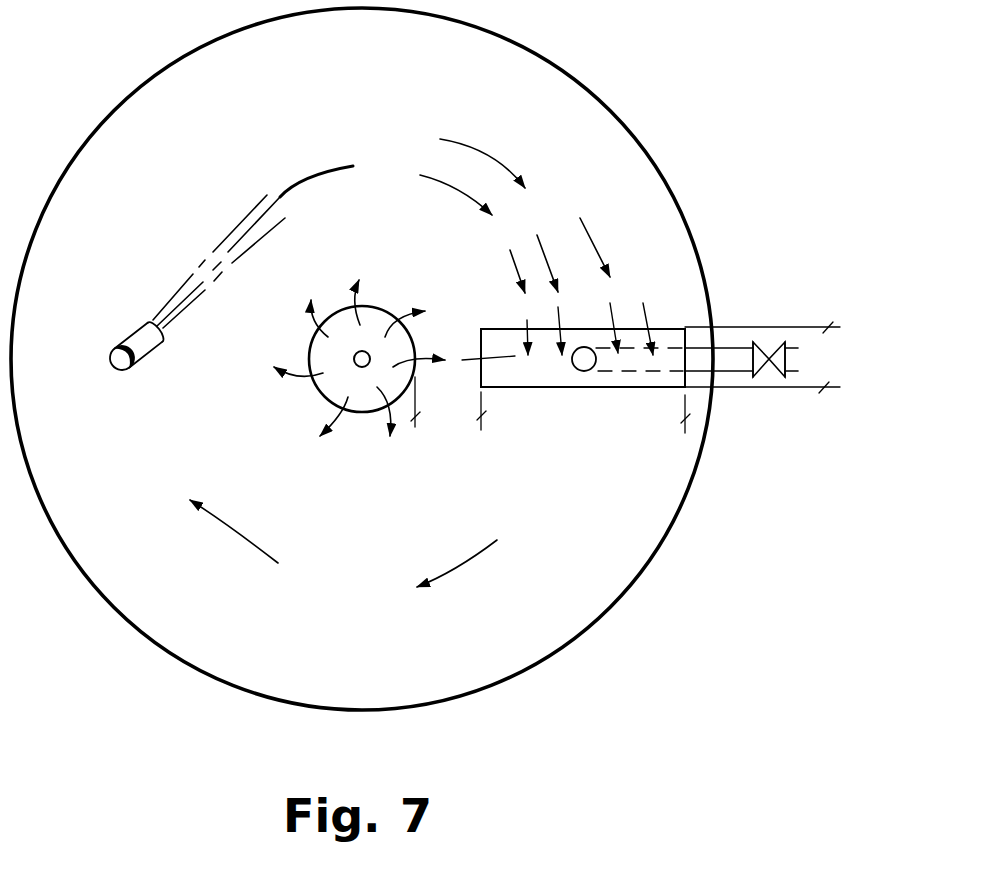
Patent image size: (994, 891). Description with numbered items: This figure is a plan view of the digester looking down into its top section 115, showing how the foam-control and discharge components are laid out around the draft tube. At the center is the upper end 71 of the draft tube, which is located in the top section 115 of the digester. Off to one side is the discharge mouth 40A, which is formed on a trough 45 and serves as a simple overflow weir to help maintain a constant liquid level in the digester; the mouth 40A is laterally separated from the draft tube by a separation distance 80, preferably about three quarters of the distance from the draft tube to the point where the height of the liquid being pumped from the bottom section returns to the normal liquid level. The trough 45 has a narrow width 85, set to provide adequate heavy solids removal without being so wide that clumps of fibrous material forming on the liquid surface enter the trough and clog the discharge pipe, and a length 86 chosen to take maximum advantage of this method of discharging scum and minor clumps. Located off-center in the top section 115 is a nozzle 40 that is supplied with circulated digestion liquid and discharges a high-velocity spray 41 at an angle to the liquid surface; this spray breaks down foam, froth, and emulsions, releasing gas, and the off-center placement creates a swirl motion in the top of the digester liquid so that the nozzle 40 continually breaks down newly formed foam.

The top section 115 is at (148, 78).
The nozzle 40 is at (124, 370).
The spray jet 41 is at (145, 323).
The upper end of the draft tube 71 is at (330, 405).
The separation distance 80 is at (448, 403).
The length of the discharge trough 86 is at (651, 377).
The discharge mouth 40A is at (665, 328).
The trough 45 is at (687, 328).
The narrow width of the trough 85 is at (797, 359).